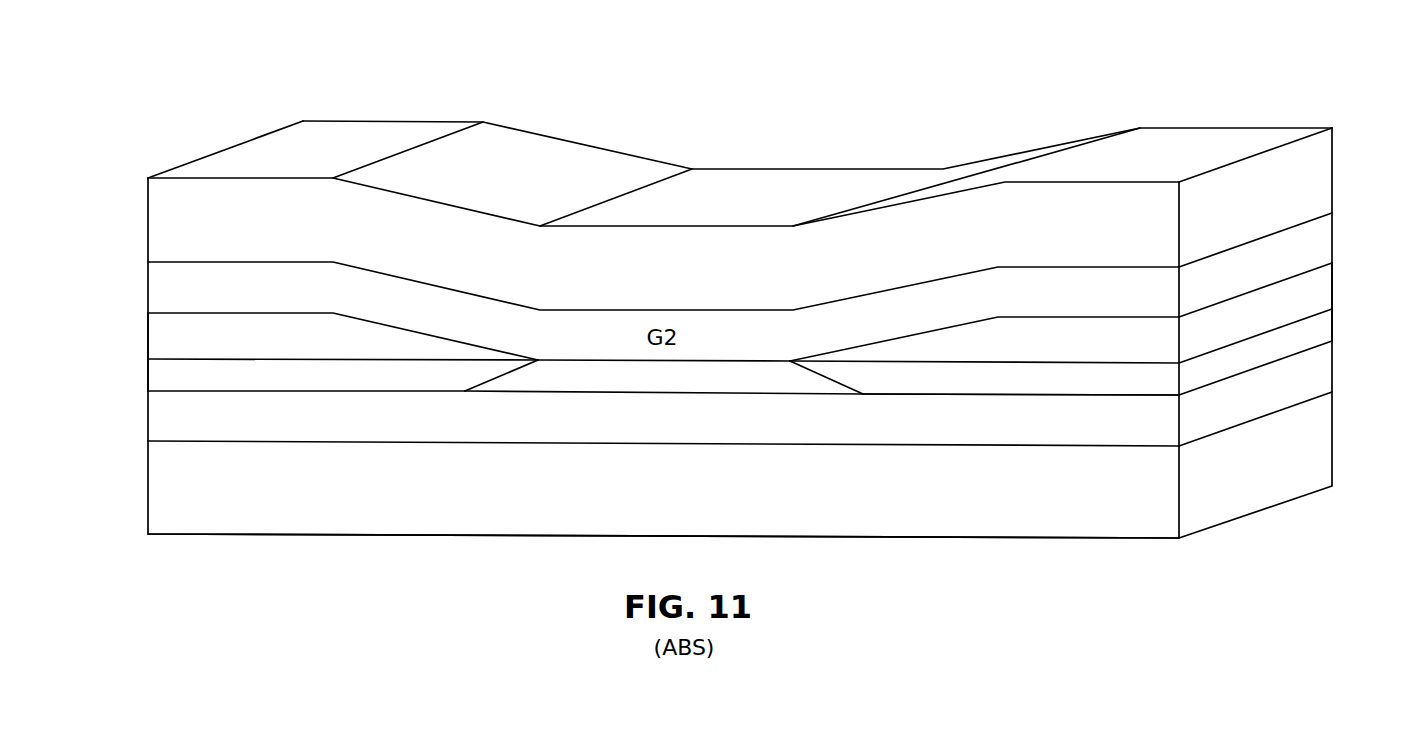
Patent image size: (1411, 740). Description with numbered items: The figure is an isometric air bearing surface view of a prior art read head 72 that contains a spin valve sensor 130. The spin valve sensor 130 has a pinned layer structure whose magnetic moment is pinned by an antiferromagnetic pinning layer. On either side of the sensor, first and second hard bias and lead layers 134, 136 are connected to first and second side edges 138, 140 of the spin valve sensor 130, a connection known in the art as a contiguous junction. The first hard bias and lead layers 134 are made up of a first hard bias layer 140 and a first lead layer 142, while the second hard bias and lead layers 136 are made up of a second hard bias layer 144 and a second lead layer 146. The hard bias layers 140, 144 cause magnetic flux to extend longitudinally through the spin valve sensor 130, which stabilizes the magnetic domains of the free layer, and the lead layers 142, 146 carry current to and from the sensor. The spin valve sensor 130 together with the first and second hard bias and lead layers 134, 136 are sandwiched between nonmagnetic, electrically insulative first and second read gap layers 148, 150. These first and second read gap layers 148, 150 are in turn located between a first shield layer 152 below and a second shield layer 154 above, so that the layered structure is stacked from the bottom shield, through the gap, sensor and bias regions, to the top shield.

The read head 72 is at (846, 118).
The spin valve sensor 130 is at (576, 345).
The first hard bias and lead layers 134 is at (142, 313).
The second hard bias and lead layers 136 is at (1335, 263).
The first side edge 138 is at (488, 381).
The first hard bias layer 140 is at (193, 375).
The first lead layer 142 is at (192, 327).
The second hard bias layer 144 is at (1128, 382).
The second lead layer 146 is at (1129, 328).
The first read gap layer 148 is at (445, 433).
The second read gap layer 150 is at (398, 295).
The first shield layer 152 is at (322, 515).
The second shield layer 154 is at (595, 157).